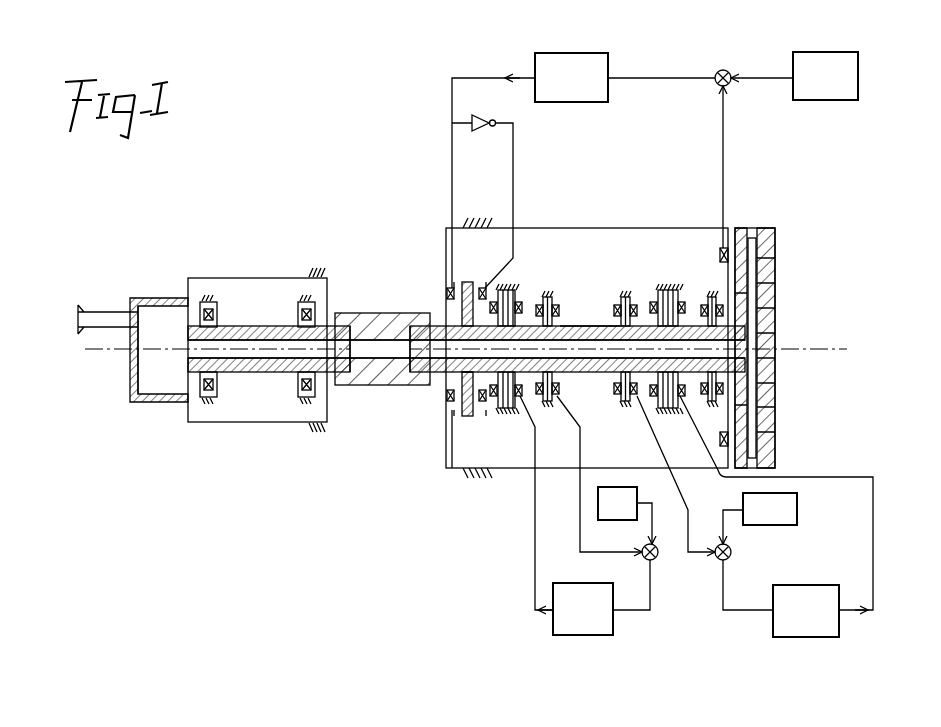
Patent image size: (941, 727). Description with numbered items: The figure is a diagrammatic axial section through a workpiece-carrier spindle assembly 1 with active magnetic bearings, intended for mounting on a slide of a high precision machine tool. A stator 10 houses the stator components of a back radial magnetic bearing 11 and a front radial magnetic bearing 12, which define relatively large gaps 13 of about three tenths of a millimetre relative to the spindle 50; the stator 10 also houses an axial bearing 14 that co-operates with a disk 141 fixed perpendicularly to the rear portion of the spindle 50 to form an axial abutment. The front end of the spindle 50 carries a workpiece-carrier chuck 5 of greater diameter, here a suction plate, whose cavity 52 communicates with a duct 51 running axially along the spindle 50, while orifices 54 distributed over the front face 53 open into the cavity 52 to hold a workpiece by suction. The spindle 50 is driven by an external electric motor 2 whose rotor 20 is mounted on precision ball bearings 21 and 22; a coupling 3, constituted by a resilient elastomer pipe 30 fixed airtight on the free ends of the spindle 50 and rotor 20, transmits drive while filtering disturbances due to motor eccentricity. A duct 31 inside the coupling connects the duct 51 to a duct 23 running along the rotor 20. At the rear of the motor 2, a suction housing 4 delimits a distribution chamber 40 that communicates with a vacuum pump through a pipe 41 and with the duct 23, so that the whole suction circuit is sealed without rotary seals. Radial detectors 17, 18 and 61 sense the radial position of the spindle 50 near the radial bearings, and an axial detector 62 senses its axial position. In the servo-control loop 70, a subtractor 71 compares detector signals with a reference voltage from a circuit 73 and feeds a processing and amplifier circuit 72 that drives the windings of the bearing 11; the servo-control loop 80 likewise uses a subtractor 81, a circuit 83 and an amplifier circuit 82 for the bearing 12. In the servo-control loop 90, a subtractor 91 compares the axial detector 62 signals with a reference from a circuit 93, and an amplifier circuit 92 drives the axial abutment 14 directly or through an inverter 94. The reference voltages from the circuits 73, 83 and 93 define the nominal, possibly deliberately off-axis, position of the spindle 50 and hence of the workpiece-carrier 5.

The workpiece-carrier spindle assembly 1 is at (566, 331).
The electric motor 2 is at (230, 276).
The coupling 3 is at (382, 357).
The suction housing 4 is at (141, 296).
The workpiece-carrier chuck 5 is at (781, 328).
The stator 10 is at (642, 228).
The back radial magnetic bearing 11 is at (522, 288).
The front radial magnetic bearing 12 is at (650, 288).
The gaps 13 is at (593, 324).
The axial bearing 14 is at (475, 282).
The disk 141 is at (466, 416).
The radial detector 17 is at (555, 300).
The radial detector 18 is at (611, 297).
The rotor 20 is at (278, 375).
The ball bearing 21 is at (210, 400).
The ball bearing 22 is at (306, 400).
The duct 23 is at (258, 352).
The pipe 30 is at (366, 313).
The duct 31 is at (367, 354).
The distribution chamber 40 is at (137, 362).
The pipe 41 is at (98, 317).
The spindle 50 is at (440, 372).
The duct 51 is at (575, 348).
The cavity 52 is at (752, 238).
The front face 53 is at (775, 275).
The orifices 54 is at (778, 332).
The radial detector 61 is at (702, 296).
The axial detector 62 is at (720, 252).
The servo-control loop 70 is at (587, 535).
The subtractor 71 is at (656, 560).
The processing and amplifier circuit 72 is at (587, 635).
The reference circuit 73 is at (607, 487).
The servo-control loop 80 is at (778, 536).
The subtractor 81 is at (728, 560).
The processing and amplifier circuit 82 is at (808, 637).
The reference circuit 83 is at (797, 503).
The servo-control loop 90 is at (679, 146).
The subtractor 91 is at (727, 70).
The processing and amplifier circuit 92 is at (548, 53).
The reference circuit 93 is at (858, 58).
The inverter 94 is at (481, 129).